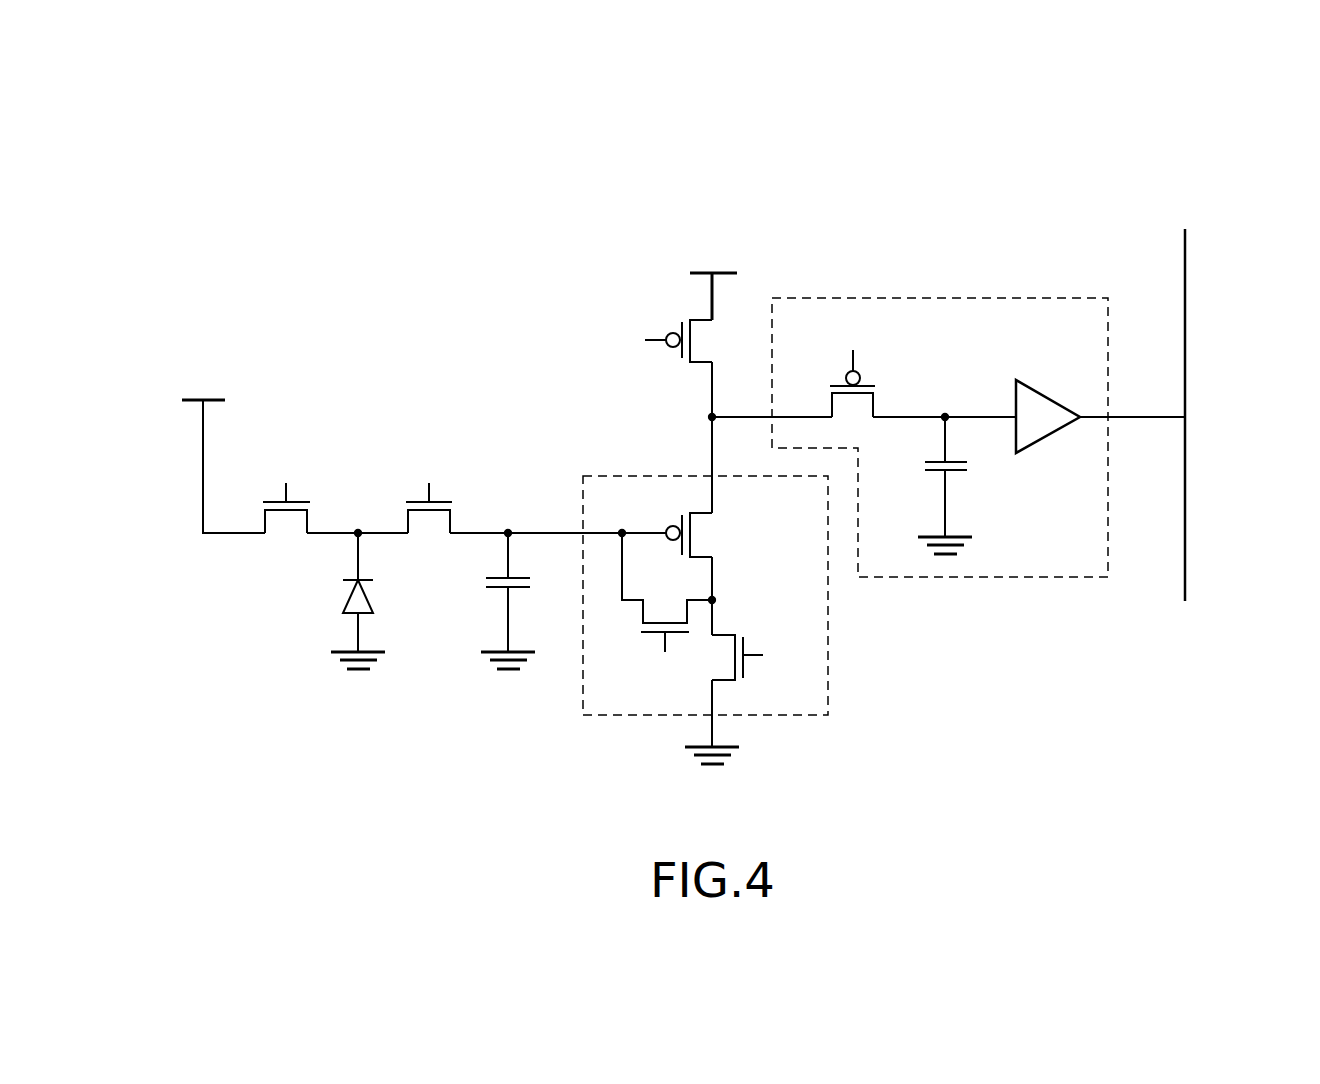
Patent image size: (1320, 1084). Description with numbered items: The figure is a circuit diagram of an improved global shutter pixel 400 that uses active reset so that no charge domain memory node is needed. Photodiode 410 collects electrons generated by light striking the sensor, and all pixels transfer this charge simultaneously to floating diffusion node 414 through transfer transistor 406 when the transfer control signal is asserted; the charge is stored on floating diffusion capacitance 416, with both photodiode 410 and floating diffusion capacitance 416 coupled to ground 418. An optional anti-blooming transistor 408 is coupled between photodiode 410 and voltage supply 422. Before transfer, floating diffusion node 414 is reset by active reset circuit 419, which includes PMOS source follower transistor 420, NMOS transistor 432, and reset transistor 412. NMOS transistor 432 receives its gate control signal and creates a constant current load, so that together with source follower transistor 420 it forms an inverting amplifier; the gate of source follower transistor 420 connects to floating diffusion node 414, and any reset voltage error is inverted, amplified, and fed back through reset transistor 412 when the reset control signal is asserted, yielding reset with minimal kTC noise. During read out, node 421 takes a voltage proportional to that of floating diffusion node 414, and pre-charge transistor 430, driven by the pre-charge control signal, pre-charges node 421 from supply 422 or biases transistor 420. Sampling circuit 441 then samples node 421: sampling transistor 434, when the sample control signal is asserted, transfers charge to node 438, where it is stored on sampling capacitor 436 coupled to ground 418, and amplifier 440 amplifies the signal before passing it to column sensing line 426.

The global shutter pixel 400 is at (1113, 186).
The transfer transistor 406 is at (408, 527).
The anti-blooming transistor 408 is at (265, 527).
The photodiode 410 is at (345, 608).
The reset transistor 412 is at (643, 610).
The floating diffusion node 414 is at (510, 530).
The floating diffusion capacitance 416 is at (488, 578).
The ground 418 is at (508, 652).
The active reset circuit 419 is at (828, 688).
The PMOS source follower transistor 420 is at (700, 513).
The node 421 is at (712, 417).
The voltage supply 422 is at (193, 405).
The column sensing line 426 is at (1185, 578).
The pre-charge transistor 430 is at (697, 320).
The NMOS transistor 432 is at (725, 635).
The sampling transistor 434 is at (877, 410).
The sampling capacitor 436 is at (960, 473).
The node 438 is at (948, 412).
The amplifier 440 is at (1040, 397).
The sampling circuit 441 is at (1052, 580).